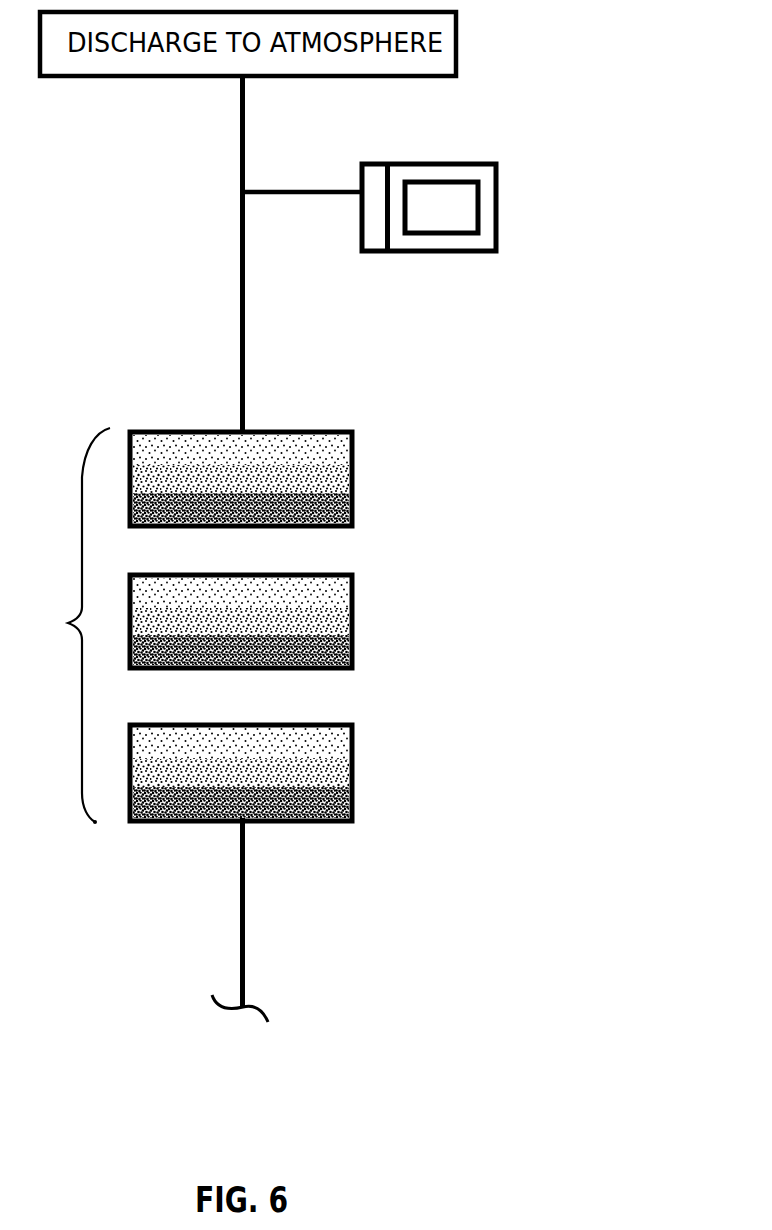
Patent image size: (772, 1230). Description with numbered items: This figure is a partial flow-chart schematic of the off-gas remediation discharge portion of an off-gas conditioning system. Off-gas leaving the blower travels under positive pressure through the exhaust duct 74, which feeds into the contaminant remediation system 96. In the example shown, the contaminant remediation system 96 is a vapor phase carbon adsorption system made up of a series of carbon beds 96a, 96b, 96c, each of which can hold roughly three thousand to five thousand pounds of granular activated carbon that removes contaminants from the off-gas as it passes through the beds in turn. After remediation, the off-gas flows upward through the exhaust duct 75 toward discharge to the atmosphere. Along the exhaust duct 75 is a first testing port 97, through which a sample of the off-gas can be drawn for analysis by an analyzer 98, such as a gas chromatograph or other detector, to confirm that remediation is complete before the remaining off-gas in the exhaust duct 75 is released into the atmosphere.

The exhaust duct 74 is at (244, 955).
The exhaust duct 75 is at (241, 353).
The contaminant remediation system 96 is at (61, 626).
The carbon bed 96a is at (355, 770).
The carbon bed 96b is at (355, 618).
The carbon bed 96c is at (353, 475).
The first testing port 97 is at (275, 190).
The analyzer 98 is at (445, 162).